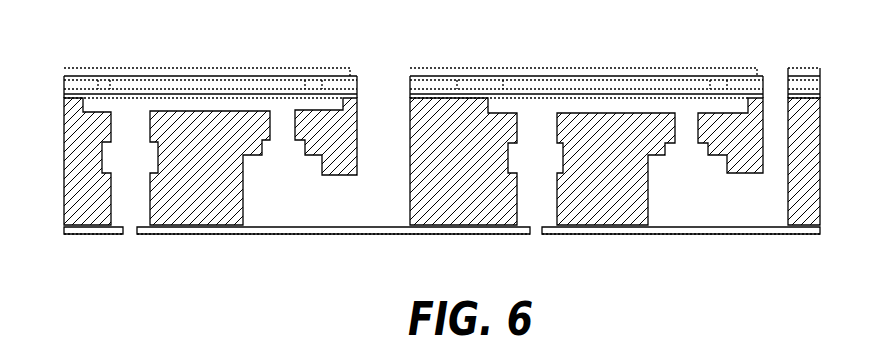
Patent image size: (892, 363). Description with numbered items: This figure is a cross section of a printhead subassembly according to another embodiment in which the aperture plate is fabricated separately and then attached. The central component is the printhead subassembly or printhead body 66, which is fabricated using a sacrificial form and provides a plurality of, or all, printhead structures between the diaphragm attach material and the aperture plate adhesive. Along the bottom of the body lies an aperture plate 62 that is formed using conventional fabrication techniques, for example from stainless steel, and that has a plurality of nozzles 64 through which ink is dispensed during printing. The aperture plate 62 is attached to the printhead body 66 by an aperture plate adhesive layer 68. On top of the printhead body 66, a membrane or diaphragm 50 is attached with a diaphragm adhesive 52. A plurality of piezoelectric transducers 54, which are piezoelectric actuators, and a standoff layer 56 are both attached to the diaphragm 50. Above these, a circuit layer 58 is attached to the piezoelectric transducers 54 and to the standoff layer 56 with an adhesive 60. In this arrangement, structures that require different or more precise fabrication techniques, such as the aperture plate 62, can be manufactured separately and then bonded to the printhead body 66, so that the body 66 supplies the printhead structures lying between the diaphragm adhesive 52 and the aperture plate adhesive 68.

The diaphragm 50 is at (63, 90).
The diaphragm adhesive 52 is at (63, 97).
The piezoelectric transducers 54 is at (207, 85).
The standoff layer 56 is at (80, 84).
The circuit layer 58 is at (280, 71).
The adhesive 60 is at (313, 79).
The aperture plate 62 is at (85, 236).
The nozzles 64 is at (130, 237).
The printhead subassembly 66 is at (63, 164).
The aperture plate adhesive layer 68 is at (212, 236).